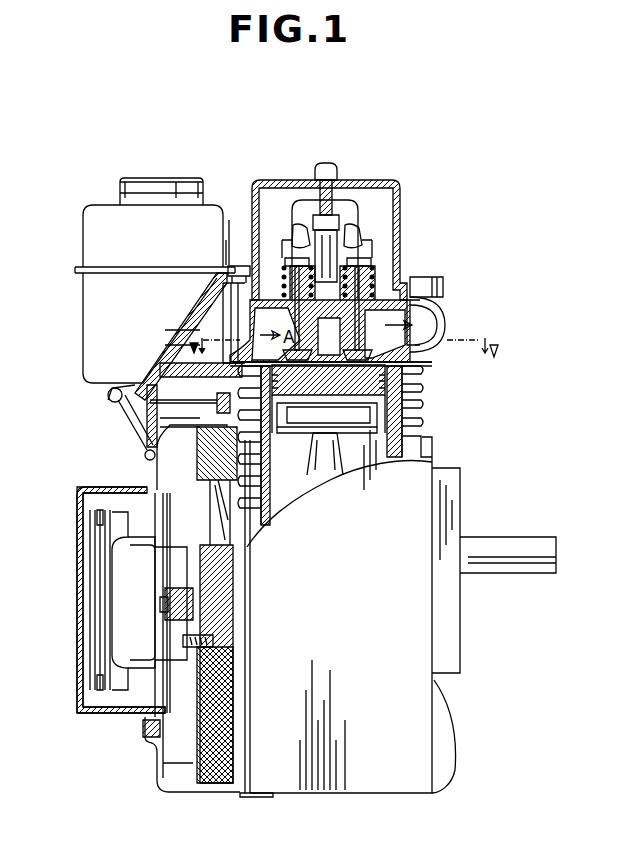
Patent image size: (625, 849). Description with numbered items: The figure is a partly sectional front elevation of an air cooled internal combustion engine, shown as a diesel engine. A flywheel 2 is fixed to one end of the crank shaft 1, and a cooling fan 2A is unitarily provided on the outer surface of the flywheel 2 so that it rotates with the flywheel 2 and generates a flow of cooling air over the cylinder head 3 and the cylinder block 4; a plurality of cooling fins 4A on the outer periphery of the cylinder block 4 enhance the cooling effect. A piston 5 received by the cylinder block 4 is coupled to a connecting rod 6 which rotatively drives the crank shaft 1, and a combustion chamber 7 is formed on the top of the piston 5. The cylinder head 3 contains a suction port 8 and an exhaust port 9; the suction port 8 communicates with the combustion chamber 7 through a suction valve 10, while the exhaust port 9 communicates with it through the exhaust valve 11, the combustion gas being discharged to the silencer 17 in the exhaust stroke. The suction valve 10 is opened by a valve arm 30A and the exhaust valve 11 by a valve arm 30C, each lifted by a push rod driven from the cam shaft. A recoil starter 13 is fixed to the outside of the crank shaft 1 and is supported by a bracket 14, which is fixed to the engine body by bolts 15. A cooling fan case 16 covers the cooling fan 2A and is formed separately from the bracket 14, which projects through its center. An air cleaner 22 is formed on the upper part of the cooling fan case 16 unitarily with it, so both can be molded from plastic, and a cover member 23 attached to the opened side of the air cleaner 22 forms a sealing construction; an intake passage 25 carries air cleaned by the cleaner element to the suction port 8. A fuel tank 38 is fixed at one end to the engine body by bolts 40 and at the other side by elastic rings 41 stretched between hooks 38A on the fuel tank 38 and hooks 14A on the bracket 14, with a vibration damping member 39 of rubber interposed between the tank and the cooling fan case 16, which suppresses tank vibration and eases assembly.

The crank shaft 1 is at (197, 598).
The flywheel 2 is at (127, 493).
The cooling fan 2A is at (210, 460).
The cylinder head 3 is at (400, 287).
The cylinder block 4 is at (232, 370).
The cooling fins 4A is at (410, 385).
The piston 5 is at (412, 402).
The connecting rod 6 is at (330, 453).
The combustion chamber 7 is at (407, 413).
The suction port 8 is at (289, 272).
The exhaust port 9 is at (400, 317).
The suction valve 10 is at (300, 405).
The exhaust valve 11 is at (400, 366).
The recoil starter 13 is at (90, 562).
The bracket 14 is at (80, 585).
The hooks 14A is at (173, 463).
The bolts 15 is at (215, 403).
The cooling fan case 16 is at (135, 433).
The silencer 17 is at (443, 323).
The air cleaner 22 is at (160, 325).
The cover member 23 is at (222, 265).
The intake passage 25 is at (232, 303).
The valve arm 30A is at (330, 230).
The valve arm 30C is at (363, 232).
The fuel tank 38 is at (104, 217).
The hooks 38A is at (100, 397).
The vibration damping member 39 is at (163, 358).
The bolts 40 is at (239, 265).
The elastic rings 41 is at (143, 452).